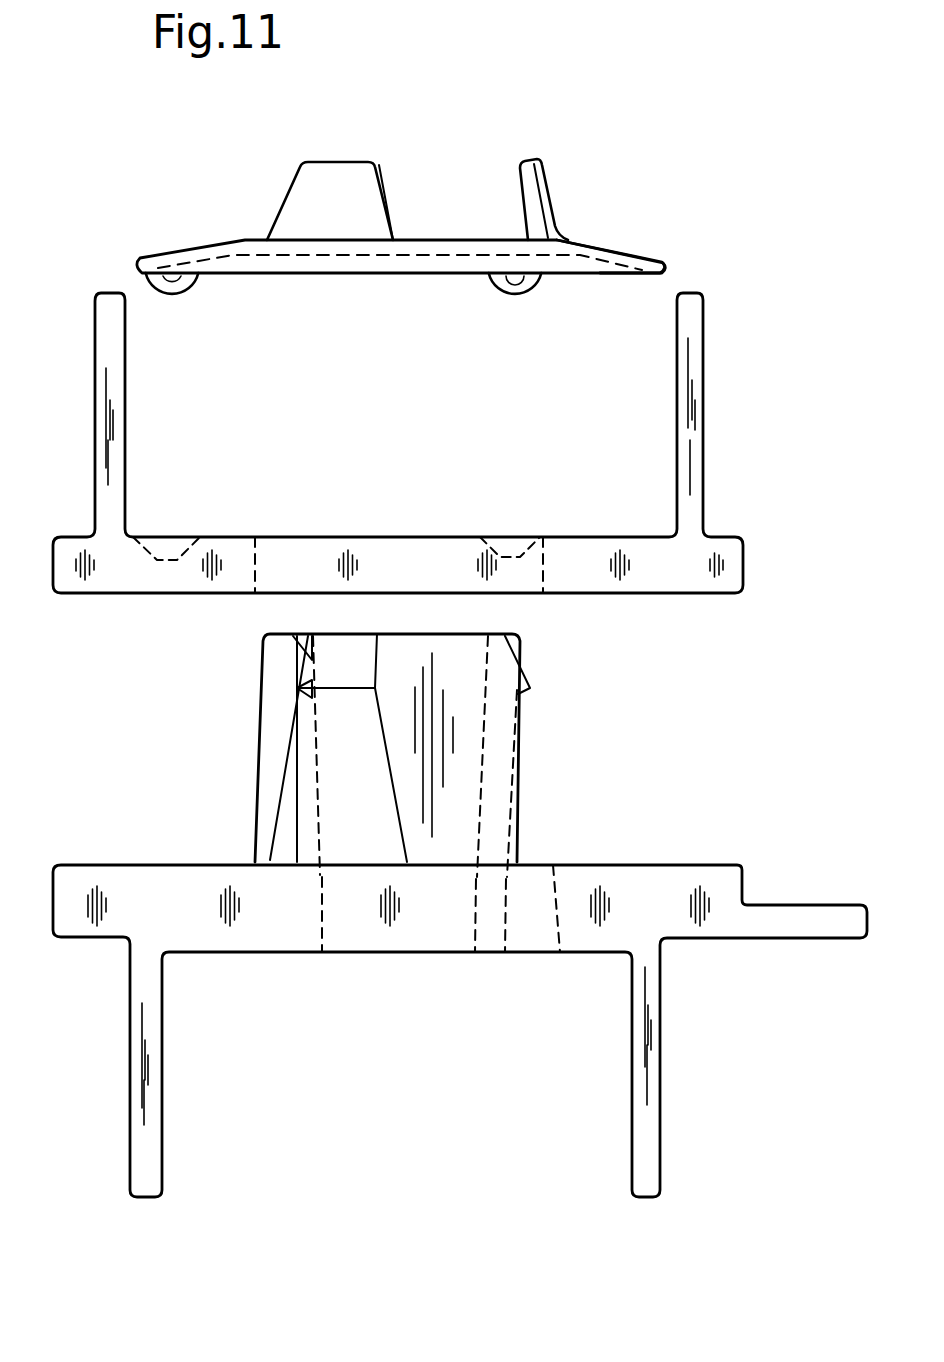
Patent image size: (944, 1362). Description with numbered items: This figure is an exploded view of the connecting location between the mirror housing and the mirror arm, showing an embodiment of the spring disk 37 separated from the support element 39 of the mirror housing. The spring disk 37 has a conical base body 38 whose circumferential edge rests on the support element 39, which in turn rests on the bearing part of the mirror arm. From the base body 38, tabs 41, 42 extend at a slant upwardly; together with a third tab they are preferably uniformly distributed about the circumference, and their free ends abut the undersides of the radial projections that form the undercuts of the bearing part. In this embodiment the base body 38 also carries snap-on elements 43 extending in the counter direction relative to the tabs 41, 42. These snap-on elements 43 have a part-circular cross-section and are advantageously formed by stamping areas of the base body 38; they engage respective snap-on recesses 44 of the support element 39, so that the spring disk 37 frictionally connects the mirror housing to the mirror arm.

The spring disk 37 is at (435, 230).
The conical base body 38 is at (588, 262).
The support element 39 is at (703, 411).
The tab 41 is at (539, 208).
The tab 42 is at (322, 192).
The snap-on element 43 is at (170, 280).
The snap-on recess 44 is at (170, 552).